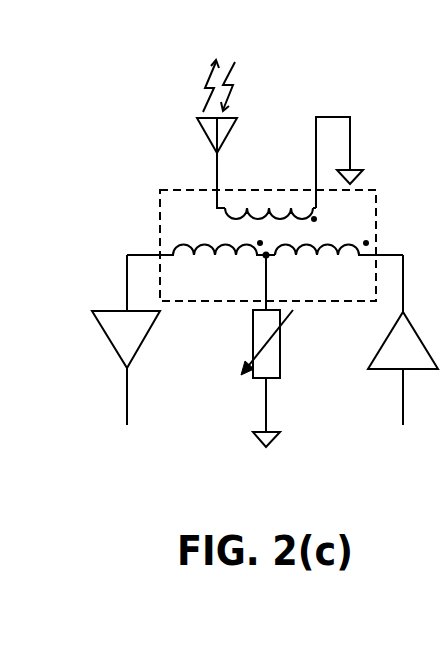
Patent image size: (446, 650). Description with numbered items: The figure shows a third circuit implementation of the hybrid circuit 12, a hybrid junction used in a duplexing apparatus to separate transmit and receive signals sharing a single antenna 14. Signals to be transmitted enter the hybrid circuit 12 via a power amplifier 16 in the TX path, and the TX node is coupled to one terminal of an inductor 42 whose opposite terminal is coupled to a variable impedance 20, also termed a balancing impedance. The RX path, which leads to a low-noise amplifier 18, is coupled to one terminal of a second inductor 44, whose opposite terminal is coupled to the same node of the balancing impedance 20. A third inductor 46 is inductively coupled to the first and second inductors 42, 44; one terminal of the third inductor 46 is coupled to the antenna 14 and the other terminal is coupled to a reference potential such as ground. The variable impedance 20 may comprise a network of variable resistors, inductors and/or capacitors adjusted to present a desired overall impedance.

The hybrid circuit 12 is at (182, 189).
The antenna 14 is at (228, 138).
The power amplifier 16 is at (381, 345).
The low-noise amplifier 18 is at (105, 341).
The variable impedance 20 is at (244, 352).
The inductor 42 is at (320, 256).
The second inductor 44 is at (213, 256).
The third inductor 46 is at (222, 218).